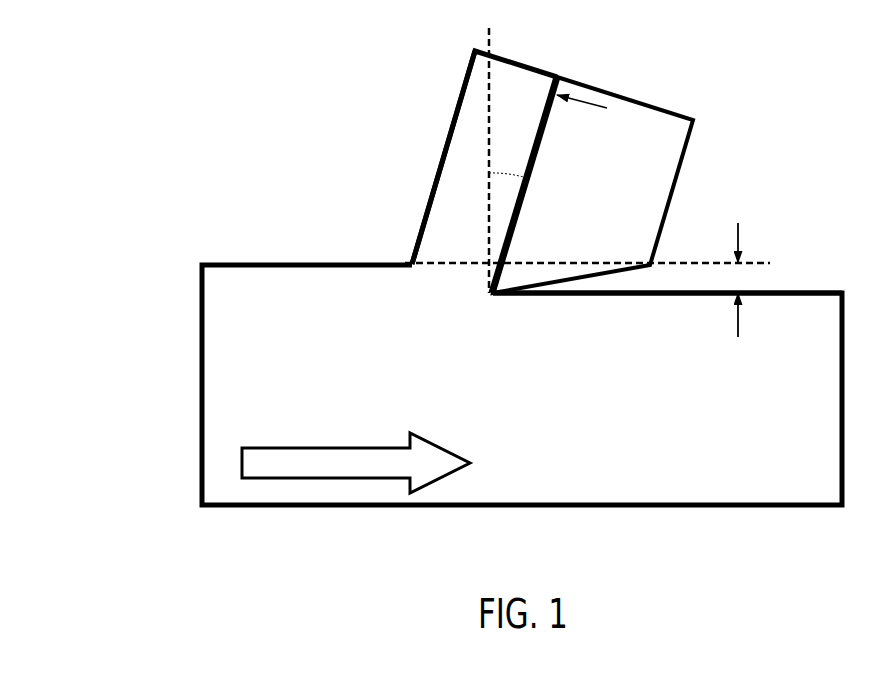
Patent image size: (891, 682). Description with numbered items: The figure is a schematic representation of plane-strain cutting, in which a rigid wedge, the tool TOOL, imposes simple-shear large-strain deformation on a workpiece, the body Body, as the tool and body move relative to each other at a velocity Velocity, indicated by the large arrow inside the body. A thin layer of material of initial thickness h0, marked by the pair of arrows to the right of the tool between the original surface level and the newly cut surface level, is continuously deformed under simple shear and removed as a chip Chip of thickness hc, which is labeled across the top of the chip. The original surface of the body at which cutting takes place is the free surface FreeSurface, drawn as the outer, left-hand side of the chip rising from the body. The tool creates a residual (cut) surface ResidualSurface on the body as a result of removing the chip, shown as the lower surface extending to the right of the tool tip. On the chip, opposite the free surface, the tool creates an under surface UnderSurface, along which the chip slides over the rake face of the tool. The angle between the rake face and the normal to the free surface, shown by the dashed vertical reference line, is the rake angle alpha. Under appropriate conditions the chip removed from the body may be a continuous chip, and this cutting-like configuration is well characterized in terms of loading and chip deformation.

The body Body is at (223, 365).
The residual (cut) surface ResidualSurface is at (637, 298).
The chip Chip is at (473, 138).
The free surface FreeSurface is at (427, 207).
The under surface UnderSurface is at (503, 225).
The tool TOOL is at (593, 185).
The rake angle alpha is at (508, 156).
The chip thickness hc is at (512, 87).
The initial thickness h0 is at (758, 280).
The velocity Velocity is at (351, 438).